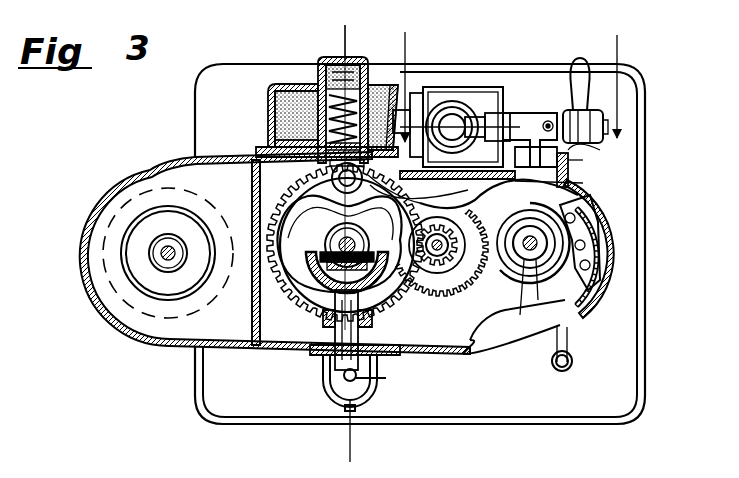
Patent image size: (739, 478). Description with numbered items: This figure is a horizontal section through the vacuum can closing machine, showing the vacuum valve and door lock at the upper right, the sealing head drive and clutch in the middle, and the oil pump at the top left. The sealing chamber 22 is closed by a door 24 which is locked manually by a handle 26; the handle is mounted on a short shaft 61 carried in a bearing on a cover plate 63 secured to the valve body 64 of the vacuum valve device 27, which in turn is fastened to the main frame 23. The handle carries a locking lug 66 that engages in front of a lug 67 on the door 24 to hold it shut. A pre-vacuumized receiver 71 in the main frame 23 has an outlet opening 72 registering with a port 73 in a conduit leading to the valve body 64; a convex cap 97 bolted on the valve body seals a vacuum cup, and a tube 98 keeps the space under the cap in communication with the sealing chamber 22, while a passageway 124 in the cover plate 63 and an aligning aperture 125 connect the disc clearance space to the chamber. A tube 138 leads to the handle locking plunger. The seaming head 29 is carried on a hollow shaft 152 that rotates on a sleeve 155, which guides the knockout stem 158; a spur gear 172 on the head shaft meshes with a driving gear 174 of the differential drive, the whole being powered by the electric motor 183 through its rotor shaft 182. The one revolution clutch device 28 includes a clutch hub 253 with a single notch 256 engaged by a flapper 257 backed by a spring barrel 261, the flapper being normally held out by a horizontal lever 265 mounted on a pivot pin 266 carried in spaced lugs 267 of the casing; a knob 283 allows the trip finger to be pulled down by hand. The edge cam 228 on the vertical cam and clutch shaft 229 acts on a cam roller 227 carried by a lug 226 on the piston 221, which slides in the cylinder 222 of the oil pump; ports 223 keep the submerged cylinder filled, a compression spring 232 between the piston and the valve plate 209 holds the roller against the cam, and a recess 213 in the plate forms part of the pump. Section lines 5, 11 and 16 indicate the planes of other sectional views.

The valve plate 209 is at (352, 58).
The section line 5- 5 is at (510, 77).
The section line 16- 16 is at (343, 37).
The section line 11- 11 is at (316, 242).
The port 223 is at (313, 85).
The compression spring 232 is at (328, 63).
The recess 213 is at (364, 66).
The cylinder 222 is at (268, 93).
The piston 221 is at (270, 106).
The lug 226 is at (272, 130).
The vacuum valve device 27 is at (453, 92).
The valve body 64 is at (482, 94).
The receiver 71 is at (440, 110).
The convex cap 97 is at (457, 127).
The tube 98 is at (495, 120).
The cover plate 63 is at (515, 115).
The handle 26 is at (579, 58).
The port 73 is at (418, 100).
The tube 138 is at (547, 118).
The shaft 61 is at (605, 122).
The locking lug 66 is at (590, 150).
The passageway 124 is at (568, 165).
The lug 67 is at (583, 162).
The aperture 125 is at (583, 183).
The sealing chamber 22 is at (600, 200).
The cam roller 227 is at (330, 178).
The edge cam 228 is at (290, 240).
The cam and clutch shaft 229 is at (349, 238).
The electric motor 183 is at (92, 258).
The rotor shaft 182 is at (168, 253).
The spring barrel 261 is at (325, 272).
The clutch hub 253 is at (365, 278).
The flapper 257 is at (360, 284).
The notch 256 is at (308, 270).
The spur gear 172 is at (442, 252).
The knockout stem 158 is at (531, 250).
The horizontal lever 265 is at (337, 254).
The driving gear 174 is at (442, 268).
The shaft 152 is at (520, 318).
The seaming head 29 is at (588, 268).
The door 24 is at (580, 287).
The sleeve 155 is at (592, 292).
The pivot pin 266 is at (323, 337).
The lugs 267 is at (312, 350).
The main frame 23 is at (452, 352).
The knob 283 is at (385, 378).
The one revolution clutch device 28 is at (315, 372).
The outlet opening 72 is at (473, 193).